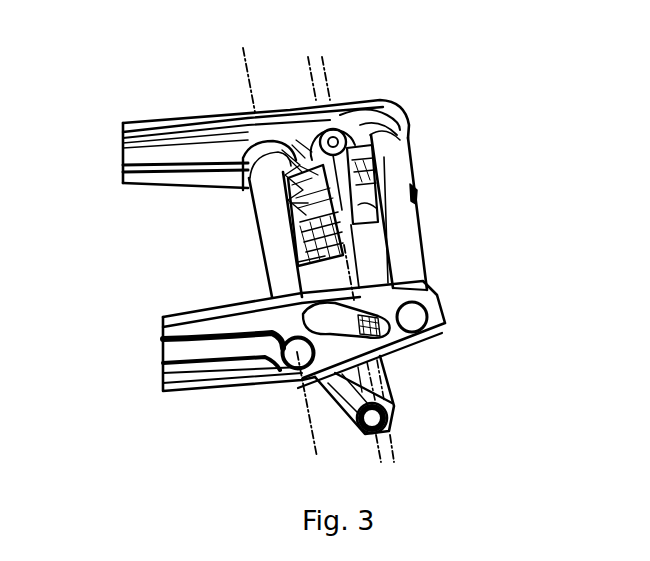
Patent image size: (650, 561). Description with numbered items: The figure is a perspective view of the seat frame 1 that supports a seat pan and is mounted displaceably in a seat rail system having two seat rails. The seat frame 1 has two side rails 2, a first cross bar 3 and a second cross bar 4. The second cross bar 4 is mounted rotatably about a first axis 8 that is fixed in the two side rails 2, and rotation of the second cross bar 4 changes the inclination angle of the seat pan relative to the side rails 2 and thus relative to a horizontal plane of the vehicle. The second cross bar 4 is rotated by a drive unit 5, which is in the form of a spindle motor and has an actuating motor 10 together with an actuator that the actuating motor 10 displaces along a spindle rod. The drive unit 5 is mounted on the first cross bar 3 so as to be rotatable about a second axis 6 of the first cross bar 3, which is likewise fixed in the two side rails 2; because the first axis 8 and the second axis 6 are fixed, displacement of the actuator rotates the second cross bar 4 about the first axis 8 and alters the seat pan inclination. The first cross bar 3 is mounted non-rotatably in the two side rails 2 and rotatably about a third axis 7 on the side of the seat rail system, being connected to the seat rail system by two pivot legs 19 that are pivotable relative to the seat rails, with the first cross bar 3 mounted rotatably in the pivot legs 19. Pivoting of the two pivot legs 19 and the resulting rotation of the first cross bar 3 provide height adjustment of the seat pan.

The seat frame 1 is at (453, 101).
The side rails 2 is at (152, 150).
The first cross bar 3 is at (272, 240).
The second cross bar 4 is at (400, 220).
The drive unit 5 is at (365, 236).
The second axis 6 is at (243, 50).
The third axis 7 is at (307, 47).
The first axis 8 is at (323, 50).
The actuating motor 10 is at (283, 214).
The pivot legs 19 is at (378, 378).